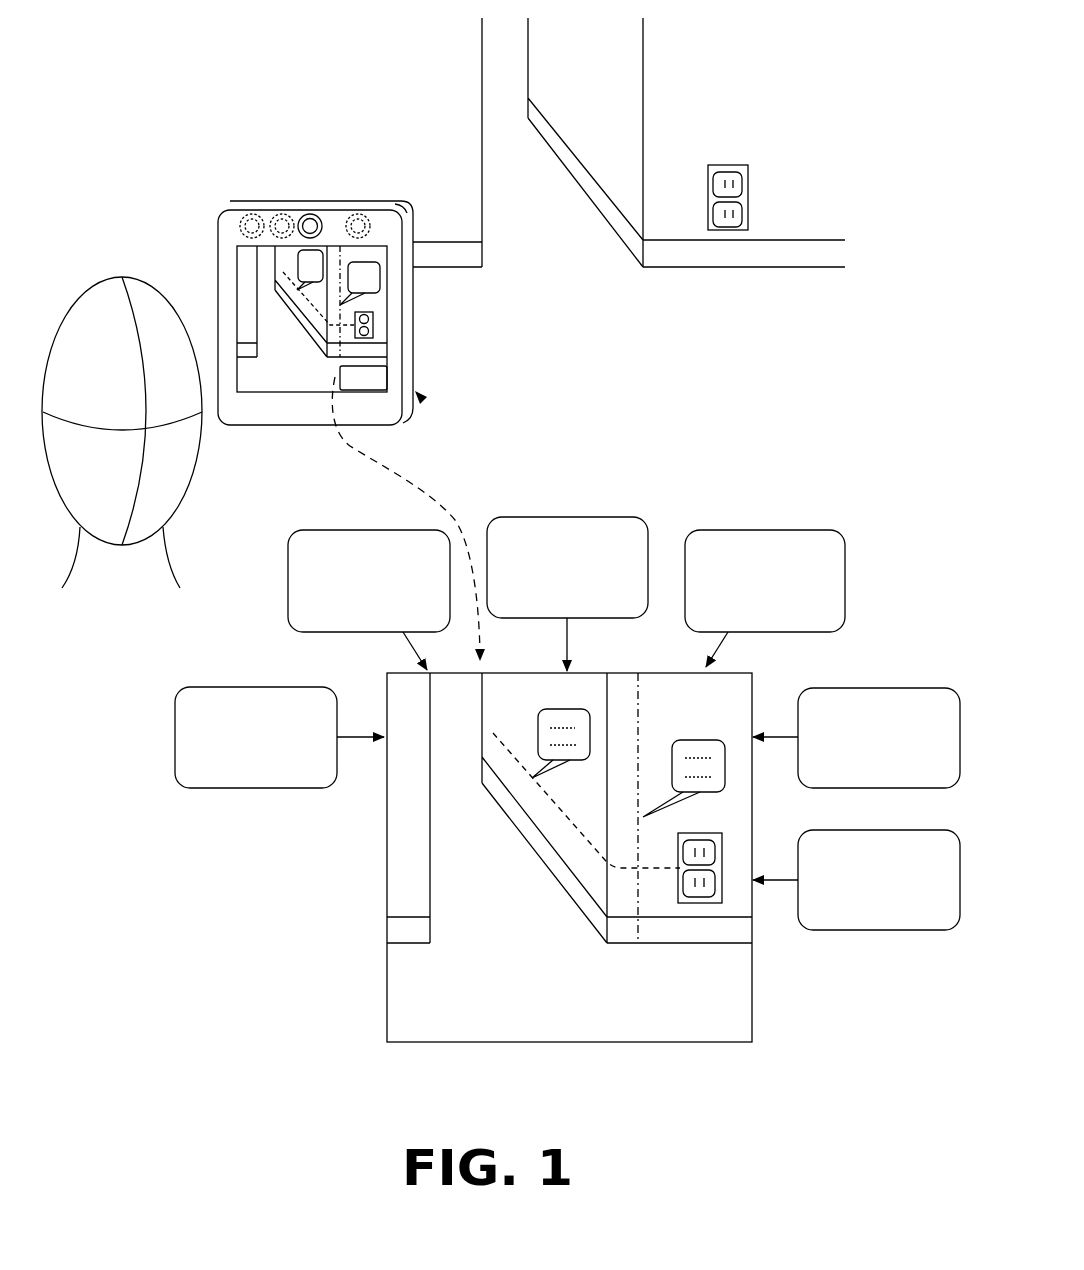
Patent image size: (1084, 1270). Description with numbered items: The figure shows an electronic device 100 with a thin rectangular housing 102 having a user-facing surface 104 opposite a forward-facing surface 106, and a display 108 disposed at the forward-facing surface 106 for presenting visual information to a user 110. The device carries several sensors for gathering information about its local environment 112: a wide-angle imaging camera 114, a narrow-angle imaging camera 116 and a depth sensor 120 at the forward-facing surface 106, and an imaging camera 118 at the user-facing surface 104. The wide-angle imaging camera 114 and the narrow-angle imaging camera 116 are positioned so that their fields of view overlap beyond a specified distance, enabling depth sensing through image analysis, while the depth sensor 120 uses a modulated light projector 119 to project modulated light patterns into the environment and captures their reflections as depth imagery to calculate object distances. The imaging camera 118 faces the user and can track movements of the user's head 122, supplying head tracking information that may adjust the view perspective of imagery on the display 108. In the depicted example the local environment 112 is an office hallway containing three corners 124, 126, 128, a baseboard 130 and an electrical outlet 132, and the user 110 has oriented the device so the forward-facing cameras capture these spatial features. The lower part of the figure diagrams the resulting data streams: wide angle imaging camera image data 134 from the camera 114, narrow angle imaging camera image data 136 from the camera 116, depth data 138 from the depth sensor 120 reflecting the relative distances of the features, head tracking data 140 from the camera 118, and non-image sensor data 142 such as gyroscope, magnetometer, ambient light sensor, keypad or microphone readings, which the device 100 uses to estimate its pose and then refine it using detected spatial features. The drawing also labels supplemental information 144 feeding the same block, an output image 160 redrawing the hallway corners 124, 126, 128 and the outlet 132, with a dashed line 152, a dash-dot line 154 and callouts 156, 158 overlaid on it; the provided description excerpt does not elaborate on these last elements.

The electronic device 100 is at (214, 275).
The housing 102 is at (410, 331).
The user-facing surface 104 is at (282, 412).
The forward-facing surface 106 is at (413, 421).
The display 108 is at (406, 513).
The user 110 is at (111, 591).
The local environment 112 is at (597, 288).
The wide-angle imaging camera 114 is at (246, 216).
The narrow-angle imaging camera 116 is at (367, 215).
The imaging camera 118 is at (318, 216).
The modulated light projector 119 is at (288, 216).
The depth sensor 120 is at (267, 210).
The head 122 is at (82, 292).
The corner 124 is at (483, 225).
The corner 126 is at (645, 97).
The corner 128 is at (530, 62).
The baseboard 130 is at (620, 220).
The electrical outlet 132 is at (748, 193).
The wide angle imaging camera image data 134 is at (240, 687).
The narrow angle imaging camera image data 136 is at (367, 530).
The depth data 138 is at (578, 517).
The head tracking data 140 is at (767, 530).
The non-image sensor data 142 is at (885, 688).
The supplemental information 144 is at (885, 830).
The dashed boundary line 152 is at (568, 818).
The dash-dot boundary line 154 is at (640, 696).
The callout annotation 156 is at (560, 709).
The callout annotation 158 is at (702, 740).
The output image 160 is at (375, 1015).